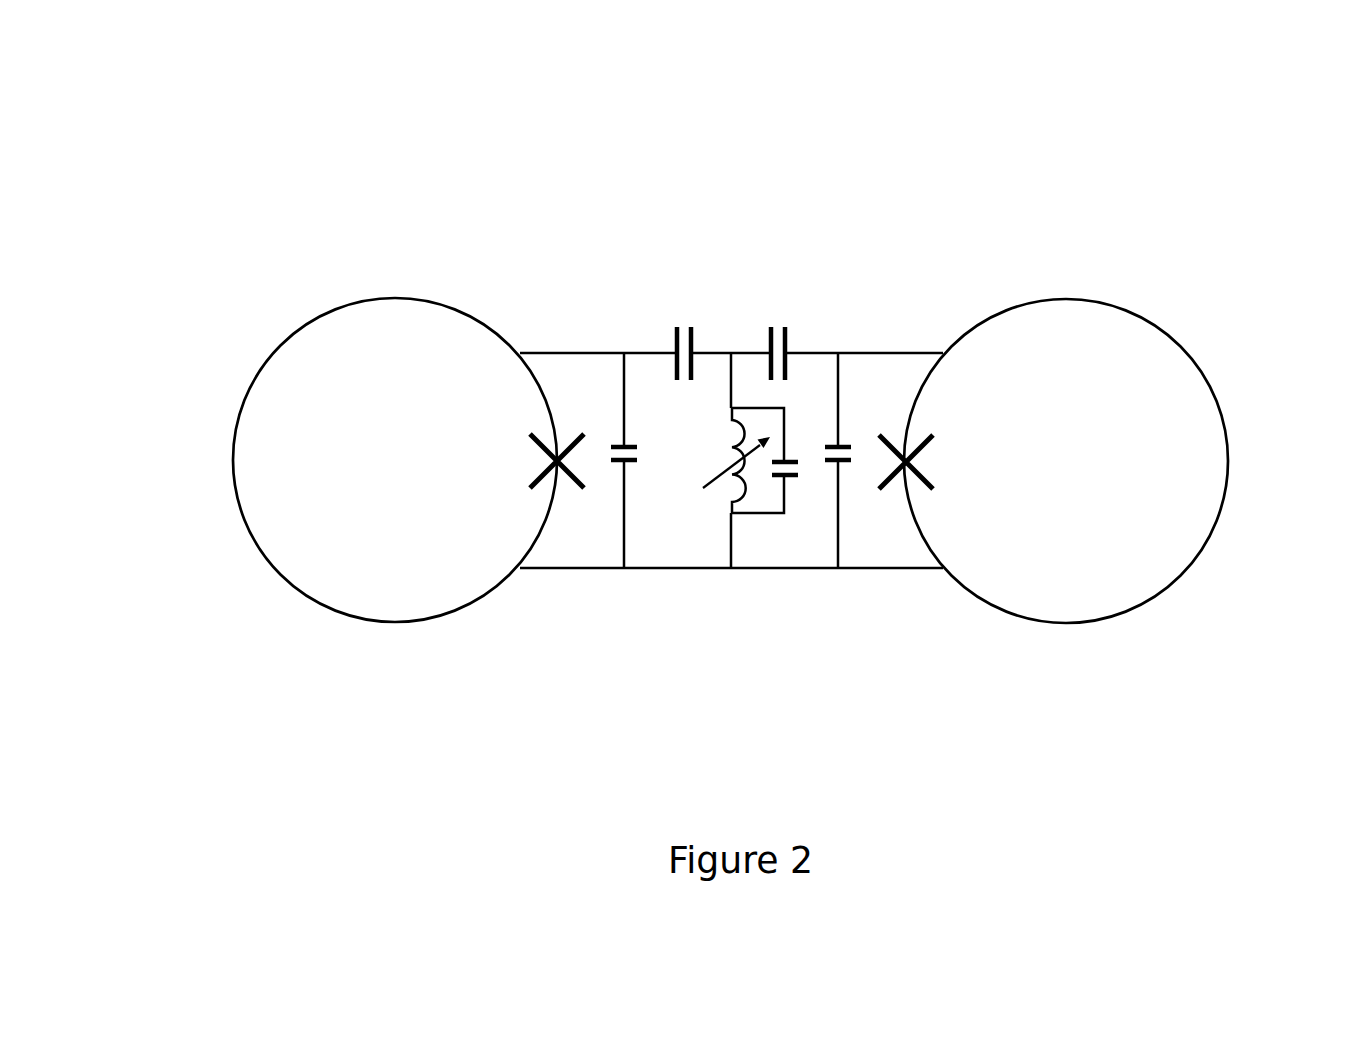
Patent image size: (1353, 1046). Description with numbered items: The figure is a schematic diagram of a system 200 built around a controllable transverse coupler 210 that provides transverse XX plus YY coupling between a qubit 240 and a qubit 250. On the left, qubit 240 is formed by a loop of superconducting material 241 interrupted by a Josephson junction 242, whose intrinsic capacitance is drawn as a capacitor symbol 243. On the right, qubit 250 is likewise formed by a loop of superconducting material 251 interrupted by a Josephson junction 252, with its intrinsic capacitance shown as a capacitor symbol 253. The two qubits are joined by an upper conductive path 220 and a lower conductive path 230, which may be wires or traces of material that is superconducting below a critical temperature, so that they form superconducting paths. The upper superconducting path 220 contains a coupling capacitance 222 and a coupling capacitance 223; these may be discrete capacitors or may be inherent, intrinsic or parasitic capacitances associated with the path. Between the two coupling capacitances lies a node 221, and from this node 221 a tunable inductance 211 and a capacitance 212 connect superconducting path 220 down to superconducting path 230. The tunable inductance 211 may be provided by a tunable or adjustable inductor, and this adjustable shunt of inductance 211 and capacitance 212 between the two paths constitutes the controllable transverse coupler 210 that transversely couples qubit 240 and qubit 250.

The system 200 is at (743, 203).
The controllable transverse coupler 210 is at (714, 617).
The tunable inductance 211 is at (718, 503).
The capacitance 212 is at (798, 493).
The conductive path 220 is at (825, 350).
The node 221 is at (677, 313).
The coupling capacitance 222 is at (732, 353).
The coupling capacitance 223 is at (787, 317).
The conductive path 230 is at (770, 572).
The qubit 240 is at (365, 467).
The loop of superconducting material 241 is at (280, 345).
The Josephson junction 242 is at (543, 492).
The capacitor symbol 243 is at (610, 480).
The qubit 250 is at (1080, 463).
The loop of superconducting material 251 is at (1187, 352).
The Josephson junction 252 is at (918, 492).
The capacitor symbol 253 is at (852, 480).